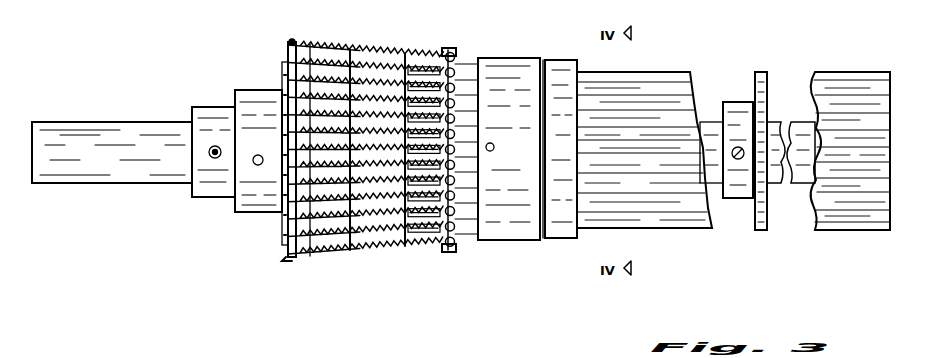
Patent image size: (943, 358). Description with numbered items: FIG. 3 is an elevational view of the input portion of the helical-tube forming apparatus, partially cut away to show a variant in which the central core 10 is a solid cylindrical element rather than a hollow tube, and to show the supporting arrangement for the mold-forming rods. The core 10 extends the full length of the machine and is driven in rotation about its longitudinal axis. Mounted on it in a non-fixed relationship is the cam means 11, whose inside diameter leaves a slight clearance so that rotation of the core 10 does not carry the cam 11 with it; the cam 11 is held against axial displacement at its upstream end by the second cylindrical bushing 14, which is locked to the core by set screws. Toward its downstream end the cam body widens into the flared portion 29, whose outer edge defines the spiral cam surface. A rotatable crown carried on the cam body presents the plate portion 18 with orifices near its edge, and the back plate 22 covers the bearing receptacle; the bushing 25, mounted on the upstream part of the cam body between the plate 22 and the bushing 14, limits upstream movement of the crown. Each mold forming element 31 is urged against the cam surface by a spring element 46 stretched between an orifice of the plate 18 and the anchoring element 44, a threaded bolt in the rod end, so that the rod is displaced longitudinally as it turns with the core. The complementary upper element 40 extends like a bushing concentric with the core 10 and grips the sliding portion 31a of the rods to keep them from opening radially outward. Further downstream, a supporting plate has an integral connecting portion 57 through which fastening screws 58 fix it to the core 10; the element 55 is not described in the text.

The central core 10 is at (131, 133).
The cam means 11 is at (292, 131).
The second cylindrical bushing 14 is at (211, 110).
The cylindrical bushing 25 is at (251, 101).
The plate portion of crown 18 is at (291, 42).
The back plate 22 is at (282, 222).
The spring element 46 is at (352, 47).
The flared portion 29 is at (392, 51).
The mold forming elements 31 is at (470, 240).
The anchoring element 44 is at (447, 252).
The complementary upper element 40 is at (515, 72).
The sliding portion of mold forming element 31a is at (691, 208).
The connecting portion 57 is at (733, 101).
The disc 55 is at (766, 72).
The fastening screws 58 is at (734, 199).